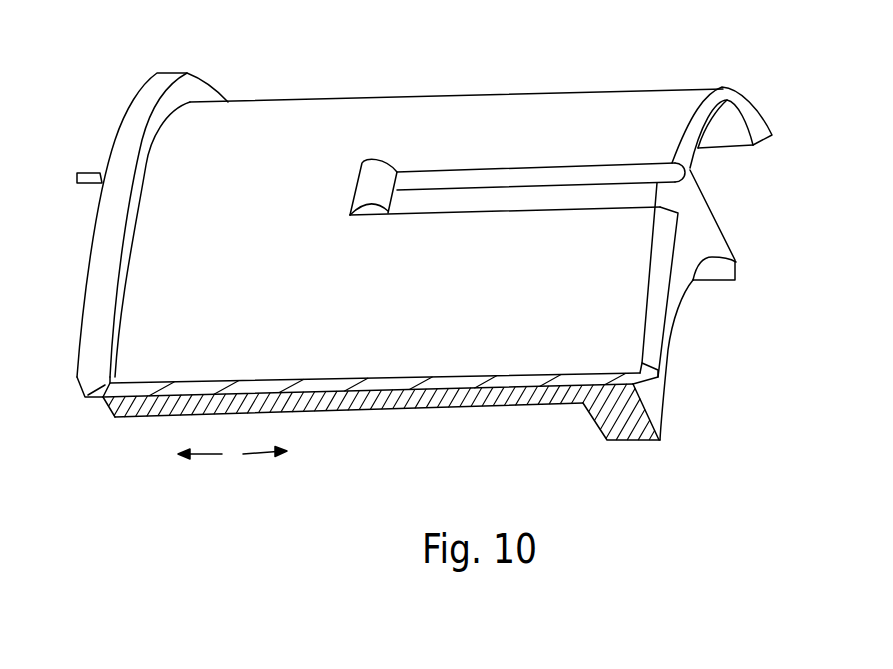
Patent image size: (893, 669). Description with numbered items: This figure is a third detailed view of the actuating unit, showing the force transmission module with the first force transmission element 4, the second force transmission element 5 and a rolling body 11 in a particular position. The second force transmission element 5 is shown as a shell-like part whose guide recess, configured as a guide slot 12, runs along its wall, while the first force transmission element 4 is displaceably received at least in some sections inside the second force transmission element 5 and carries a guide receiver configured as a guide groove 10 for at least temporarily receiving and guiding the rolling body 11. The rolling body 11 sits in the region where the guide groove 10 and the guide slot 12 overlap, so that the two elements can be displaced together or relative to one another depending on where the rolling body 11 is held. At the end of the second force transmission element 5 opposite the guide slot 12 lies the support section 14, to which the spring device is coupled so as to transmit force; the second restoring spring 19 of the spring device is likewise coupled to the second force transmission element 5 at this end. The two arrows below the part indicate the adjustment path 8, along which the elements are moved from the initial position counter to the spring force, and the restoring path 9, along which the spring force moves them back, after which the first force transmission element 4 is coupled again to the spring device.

The first force transmission element 4 is at (703, 233).
The second force transmission element 5 is at (290, 132).
The adjustment path 8 is at (203, 454).
The restoring path 9 is at (260, 454).
The guide groove 10 is at (585, 198).
The rolling body 11 is at (373, 177).
The guide slot 12 is at (460, 200).
The support section 14 is at (140, 113).
The second restoring spring 19 is at (88, 175).